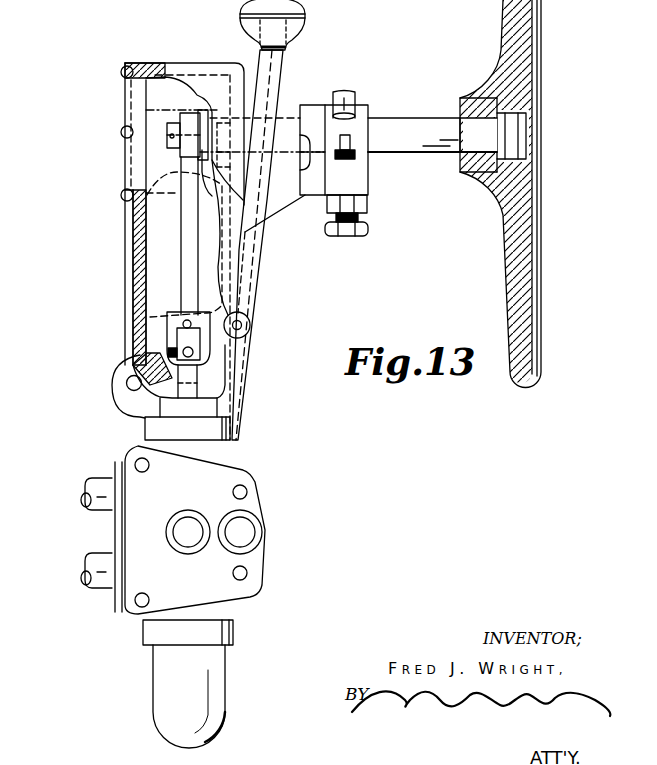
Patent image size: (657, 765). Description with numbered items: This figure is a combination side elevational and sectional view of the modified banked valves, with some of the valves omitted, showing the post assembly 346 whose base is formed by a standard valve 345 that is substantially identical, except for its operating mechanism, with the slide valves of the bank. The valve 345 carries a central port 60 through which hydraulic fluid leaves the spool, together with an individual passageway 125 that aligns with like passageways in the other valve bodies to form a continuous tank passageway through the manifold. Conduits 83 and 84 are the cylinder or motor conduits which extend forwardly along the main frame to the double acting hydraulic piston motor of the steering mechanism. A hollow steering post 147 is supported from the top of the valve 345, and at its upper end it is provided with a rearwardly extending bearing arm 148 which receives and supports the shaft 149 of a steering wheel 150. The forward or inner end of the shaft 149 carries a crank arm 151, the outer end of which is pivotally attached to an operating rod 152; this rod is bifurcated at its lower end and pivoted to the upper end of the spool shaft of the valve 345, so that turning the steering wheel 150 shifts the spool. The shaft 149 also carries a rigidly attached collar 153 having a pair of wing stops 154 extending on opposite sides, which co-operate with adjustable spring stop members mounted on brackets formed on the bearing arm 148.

The central port 60 is at (188, 532).
The cylinder conduit 83 is at (97, 493).
The cylinder conduit 84 is at (98, 567).
The individual passageway 125 is at (242, 531).
The hollow steering post 147 is at (138, 225).
The bearing arm 148 is at (305, 108).
The shaft 149 is at (416, 144).
The steering wheel 150 is at (528, 376).
The crank arm 151 is at (178, 115).
The operating rod 152 is at (188, 238).
The collar 153 is at (356, 128).
The wing stops 154 is at (347, 92).
The standard valve 345 is at (250, 464).
The post assembly 346 is at (122, 285).